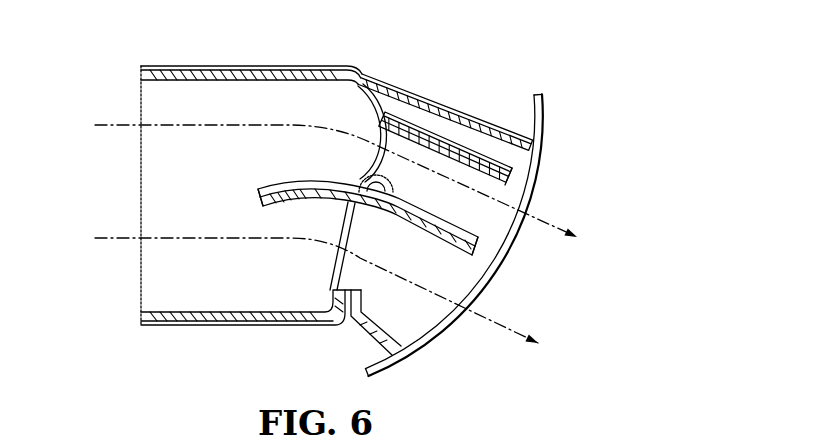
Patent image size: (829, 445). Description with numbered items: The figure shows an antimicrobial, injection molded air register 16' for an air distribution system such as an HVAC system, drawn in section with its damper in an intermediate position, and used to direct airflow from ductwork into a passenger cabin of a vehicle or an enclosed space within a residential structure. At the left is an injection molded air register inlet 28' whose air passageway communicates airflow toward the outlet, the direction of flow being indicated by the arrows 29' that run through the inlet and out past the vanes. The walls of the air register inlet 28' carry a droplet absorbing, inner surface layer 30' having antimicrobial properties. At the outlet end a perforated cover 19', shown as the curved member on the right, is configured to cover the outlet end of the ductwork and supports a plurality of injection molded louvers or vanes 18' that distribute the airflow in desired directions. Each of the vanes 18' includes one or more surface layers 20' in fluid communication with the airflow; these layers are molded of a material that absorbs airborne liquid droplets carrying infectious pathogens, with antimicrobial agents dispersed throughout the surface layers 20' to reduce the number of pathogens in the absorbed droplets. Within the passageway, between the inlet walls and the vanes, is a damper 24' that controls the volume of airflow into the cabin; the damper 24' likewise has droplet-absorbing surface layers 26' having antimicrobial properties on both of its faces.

The air register 16' is at (333, 209).
The louvers or vanes 18' is at (525, 267).
The perforated cover 19' is at (501, 235).
The surface layers 20' is at (384, 196).
The damper 24' is at (343, 220).
The droplet-absorbing surface layers 26' is at (253, 211).
The air register inlet 28' is at (221, 237).
The arrows 29' is at (303, 234).
The inner surface layer 30' is at (228, 195).